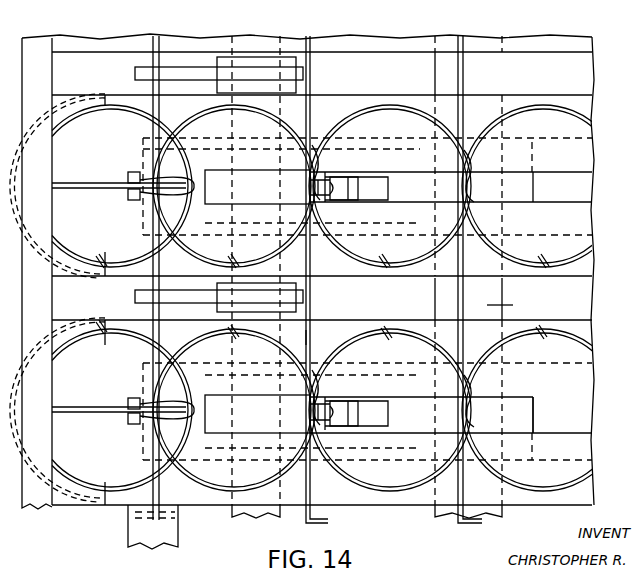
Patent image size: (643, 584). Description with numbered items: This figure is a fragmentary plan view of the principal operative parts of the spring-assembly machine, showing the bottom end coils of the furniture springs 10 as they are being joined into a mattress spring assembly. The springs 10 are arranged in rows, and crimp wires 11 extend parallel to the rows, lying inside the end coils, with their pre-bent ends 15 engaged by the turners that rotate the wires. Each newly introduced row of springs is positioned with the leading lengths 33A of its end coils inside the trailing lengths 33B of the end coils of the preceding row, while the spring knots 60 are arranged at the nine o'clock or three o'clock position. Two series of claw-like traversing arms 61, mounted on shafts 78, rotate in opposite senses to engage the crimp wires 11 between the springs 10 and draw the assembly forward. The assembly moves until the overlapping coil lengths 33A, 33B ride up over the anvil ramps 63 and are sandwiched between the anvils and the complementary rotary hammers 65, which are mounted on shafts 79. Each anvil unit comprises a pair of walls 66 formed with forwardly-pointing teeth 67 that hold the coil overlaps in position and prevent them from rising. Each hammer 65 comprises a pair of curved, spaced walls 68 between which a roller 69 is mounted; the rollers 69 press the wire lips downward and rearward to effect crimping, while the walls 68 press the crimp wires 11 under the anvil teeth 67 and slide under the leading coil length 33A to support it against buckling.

The furniture springs 10 is at (128, 104).
The crimp wires 11 is at (161, 37).
The ends of the crimp wires 15 is at (128, 519).
The leading lengths of the end coils 33A is at (143, 152).
The trailing lengths of the end coils 33B is at (165, 221).
The spring knots 60 is at (100, 328).
The traversing arms 61 is at (186, 298).
The anvil ramps 63 is at (221, 182).
The rotary hammers 65 is at (368, 190).
The walls of the anvil unit 66 is at (285, 201).
The anvil teeth 67 is at (318, 172).
The hammer walls 68 is at (338, 178).
The roller 69 is at (344, 184).
The shafts for the traversing arms 78 is at (309, 338).
The shafts for the hammers 79 is at (503, 505).